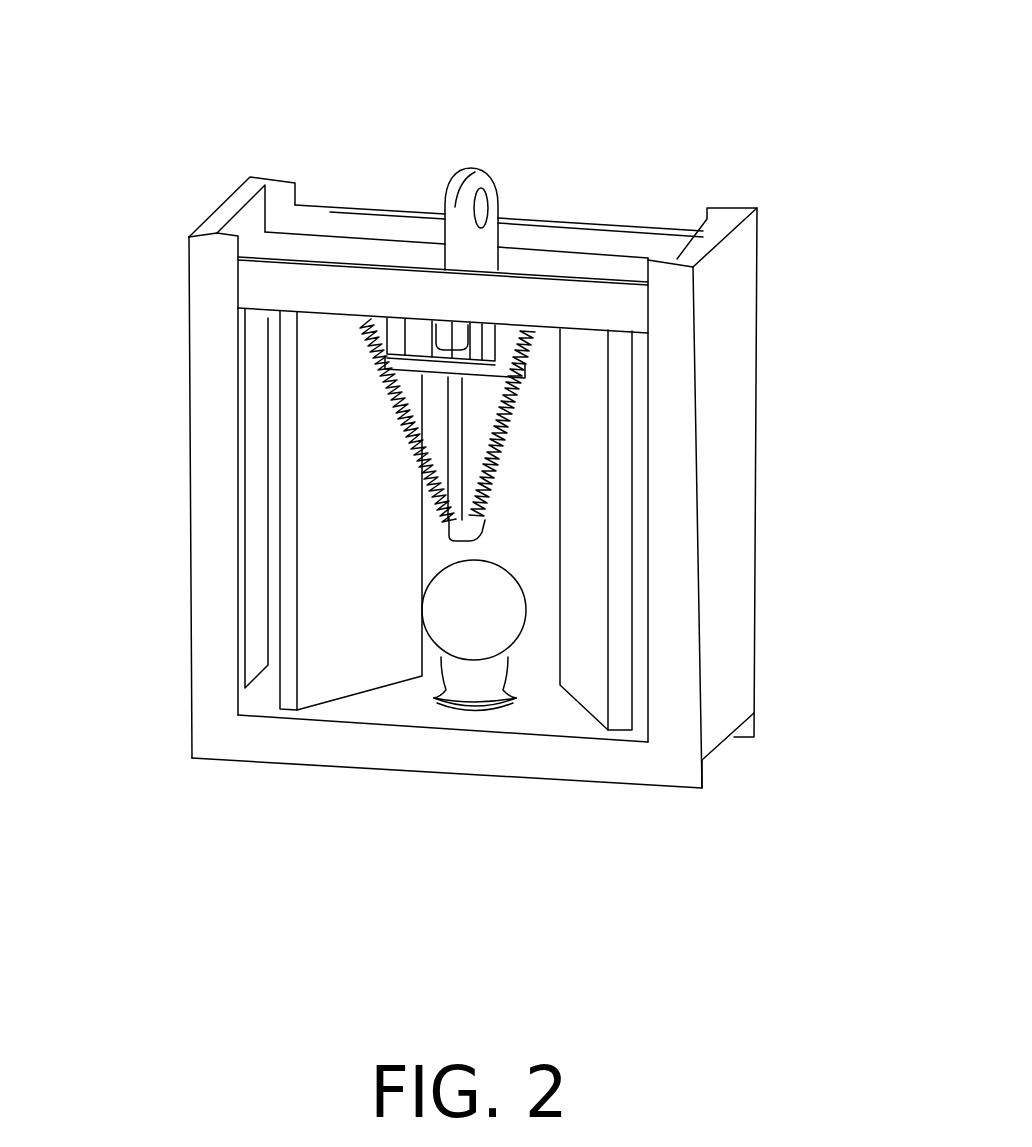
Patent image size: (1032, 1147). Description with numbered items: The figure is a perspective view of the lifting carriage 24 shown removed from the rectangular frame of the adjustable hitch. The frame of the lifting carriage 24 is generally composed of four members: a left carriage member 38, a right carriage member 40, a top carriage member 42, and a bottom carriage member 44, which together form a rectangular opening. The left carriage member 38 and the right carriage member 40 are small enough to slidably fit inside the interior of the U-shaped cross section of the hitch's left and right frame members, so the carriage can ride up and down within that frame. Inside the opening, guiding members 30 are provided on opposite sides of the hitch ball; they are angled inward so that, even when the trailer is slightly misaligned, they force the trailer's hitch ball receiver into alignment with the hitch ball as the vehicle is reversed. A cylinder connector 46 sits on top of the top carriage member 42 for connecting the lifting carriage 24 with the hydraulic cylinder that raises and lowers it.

The lifting carriage 24 is at (186, 175).
The guiding members 30 is at (583, 657).
The left carriage member 38 is at (213, 503).
The right carriage member 40 is at (715, 420).
The top carriage member 42 is at (388, 202).
The bottom carriage member 44 is at (610, 767).
The cylinder connector 46 is at (487, 236).